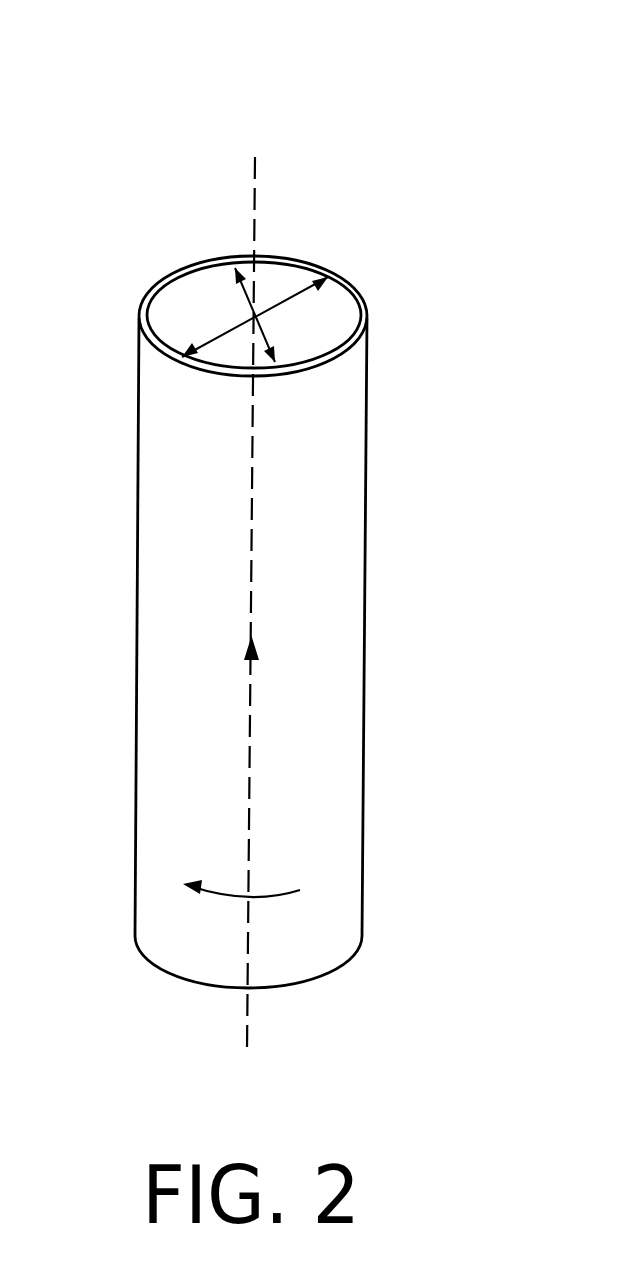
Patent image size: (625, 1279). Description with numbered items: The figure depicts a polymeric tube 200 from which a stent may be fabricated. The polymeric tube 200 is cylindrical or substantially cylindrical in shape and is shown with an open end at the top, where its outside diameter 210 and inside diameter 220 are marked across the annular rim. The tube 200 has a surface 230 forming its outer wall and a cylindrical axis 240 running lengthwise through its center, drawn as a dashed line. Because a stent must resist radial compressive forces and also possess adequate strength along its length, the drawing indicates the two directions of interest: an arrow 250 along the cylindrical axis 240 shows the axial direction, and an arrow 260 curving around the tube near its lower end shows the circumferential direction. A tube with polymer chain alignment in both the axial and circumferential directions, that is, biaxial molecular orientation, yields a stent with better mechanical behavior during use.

The polymeric tube 200 is at (281, 529).
The outside diameter 210 is at (278, 297).
The inside diameter 220 is at (248, 305).
The surface 230 is at (317, 538).
The cylindrical axis 240 is at (253, 448).
The arrow 250 is at (251, 718).
The arrow 260 is at (270, 900).